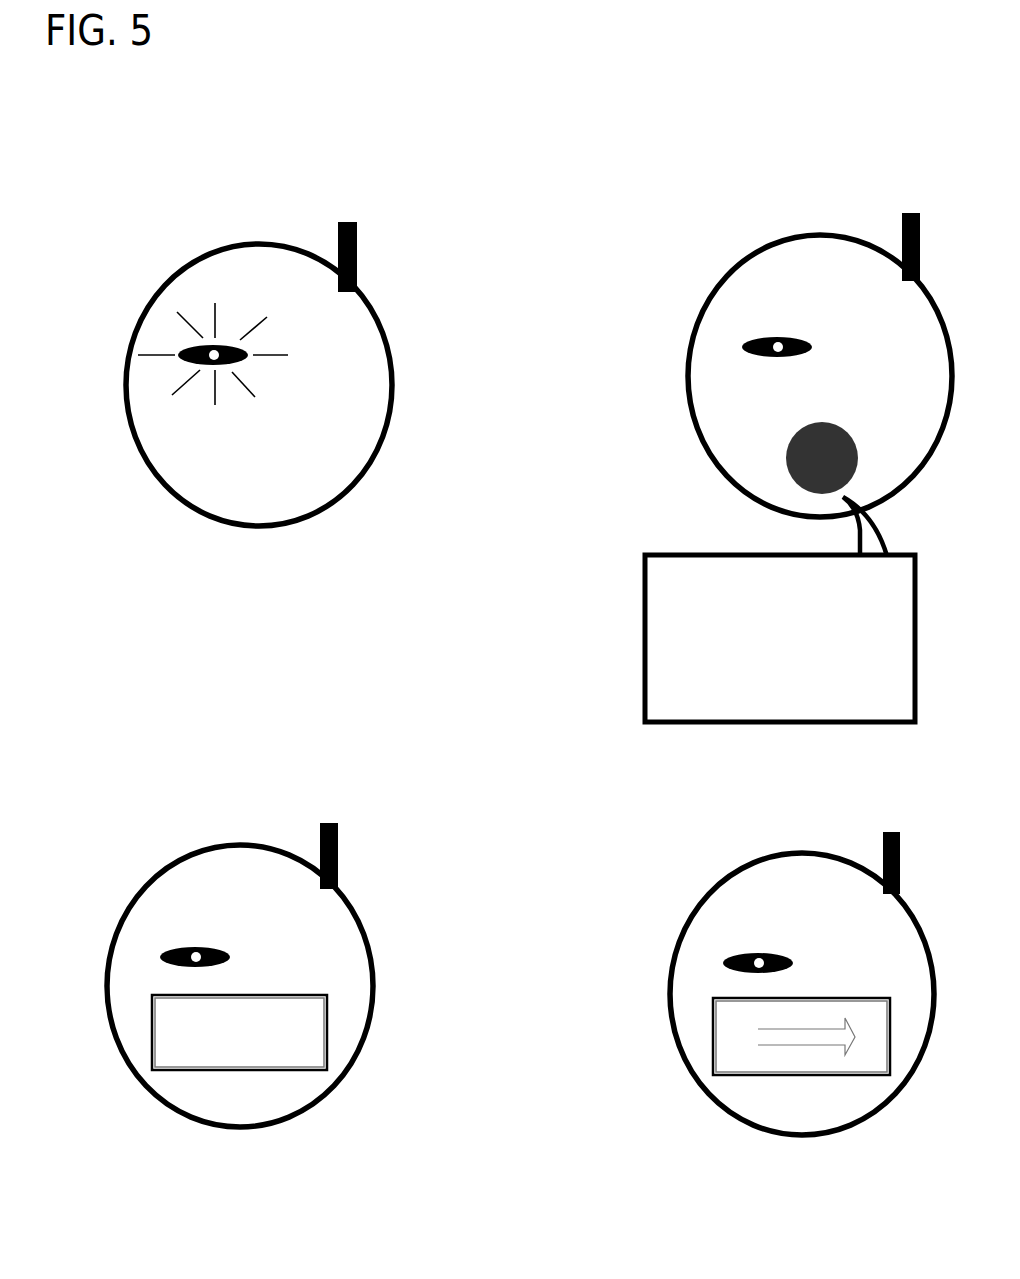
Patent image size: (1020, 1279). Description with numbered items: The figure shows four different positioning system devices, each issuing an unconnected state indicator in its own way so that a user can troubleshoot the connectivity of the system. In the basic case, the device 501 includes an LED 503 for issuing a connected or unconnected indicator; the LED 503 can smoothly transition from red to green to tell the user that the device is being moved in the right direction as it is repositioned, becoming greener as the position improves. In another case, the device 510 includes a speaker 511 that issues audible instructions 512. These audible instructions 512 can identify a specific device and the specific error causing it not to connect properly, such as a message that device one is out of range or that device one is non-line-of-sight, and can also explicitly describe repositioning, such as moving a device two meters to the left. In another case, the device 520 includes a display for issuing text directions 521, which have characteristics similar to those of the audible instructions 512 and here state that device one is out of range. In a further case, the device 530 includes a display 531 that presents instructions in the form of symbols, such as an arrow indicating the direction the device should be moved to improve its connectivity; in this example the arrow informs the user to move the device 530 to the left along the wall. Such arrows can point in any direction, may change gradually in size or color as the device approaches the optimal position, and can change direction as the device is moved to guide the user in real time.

The device 501 is at (353, 362).
The LED 503 is at (185, 425).
The device 510 is at (918, 355).
The speaker 511 is at (818, 420).
The audible instructions 512 is at (710, 703).
The device 520 is at (320, 960).
The text directions 521 is at (328, 1033).
The device 530 is at (883, 970).
The display 531 is at (713, 1029).